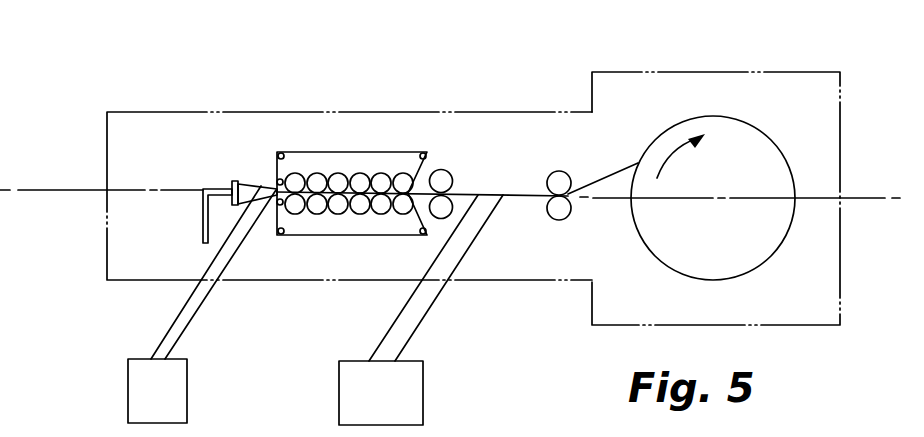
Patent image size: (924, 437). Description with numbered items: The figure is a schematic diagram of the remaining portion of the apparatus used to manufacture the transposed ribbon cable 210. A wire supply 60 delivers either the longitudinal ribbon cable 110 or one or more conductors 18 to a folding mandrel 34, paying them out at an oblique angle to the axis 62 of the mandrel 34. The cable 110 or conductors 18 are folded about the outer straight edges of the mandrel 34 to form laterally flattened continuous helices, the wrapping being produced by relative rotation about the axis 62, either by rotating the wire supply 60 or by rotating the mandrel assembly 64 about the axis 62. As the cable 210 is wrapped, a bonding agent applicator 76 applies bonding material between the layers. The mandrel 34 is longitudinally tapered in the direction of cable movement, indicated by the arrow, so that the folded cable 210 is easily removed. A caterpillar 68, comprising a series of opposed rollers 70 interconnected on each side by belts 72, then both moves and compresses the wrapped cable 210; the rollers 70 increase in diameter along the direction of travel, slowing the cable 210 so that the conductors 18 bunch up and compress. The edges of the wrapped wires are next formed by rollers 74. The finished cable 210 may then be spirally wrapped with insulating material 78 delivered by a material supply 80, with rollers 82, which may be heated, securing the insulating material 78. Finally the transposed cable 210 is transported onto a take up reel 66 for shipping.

The conductor 18 is at (177, 327).
The folding mandrel 34 is at (247, 181).
The wire supply 60 is at (172, 392).
The axis 62 is at (63, 190).
The mandrel assembly 64 is at (730, 72).
The take up reel 66 is at (752, 125).
The caterpillar 68 is at (367, 165).
The opposed rollers 70 is at (334, 173).
The belts 72 is at (402, 152).
The rollers 74 is at (450, 173).
The bonding agent applicator 76 is at (203, 219).
The insulating material 78 is at (430, 312).
The material supply 80 is at (407, 395).
The rollers 82 is at (558, 171).
The ribbon cable 110 is at (207, 292).
The transposed ribbon cable 210 is at (603, 177).